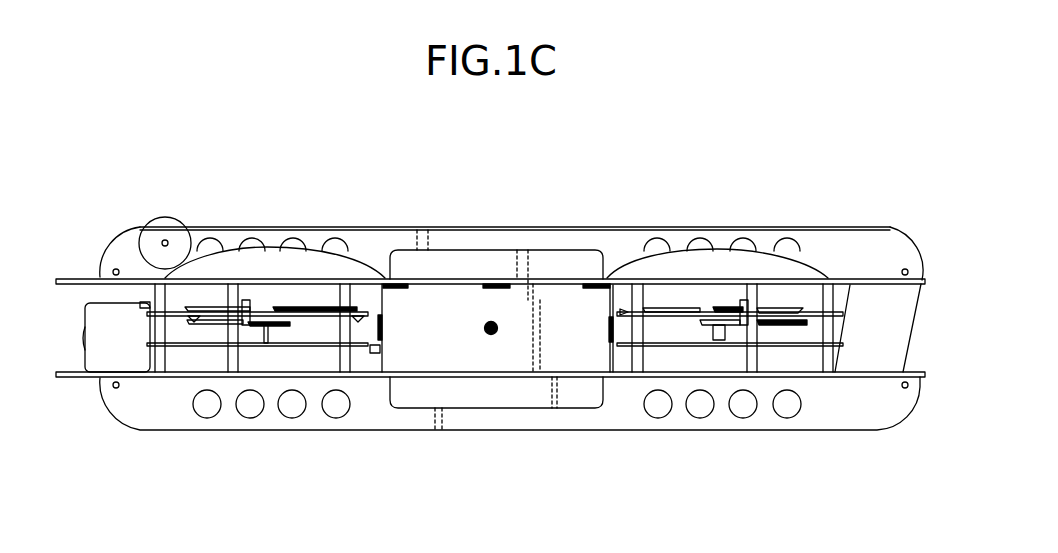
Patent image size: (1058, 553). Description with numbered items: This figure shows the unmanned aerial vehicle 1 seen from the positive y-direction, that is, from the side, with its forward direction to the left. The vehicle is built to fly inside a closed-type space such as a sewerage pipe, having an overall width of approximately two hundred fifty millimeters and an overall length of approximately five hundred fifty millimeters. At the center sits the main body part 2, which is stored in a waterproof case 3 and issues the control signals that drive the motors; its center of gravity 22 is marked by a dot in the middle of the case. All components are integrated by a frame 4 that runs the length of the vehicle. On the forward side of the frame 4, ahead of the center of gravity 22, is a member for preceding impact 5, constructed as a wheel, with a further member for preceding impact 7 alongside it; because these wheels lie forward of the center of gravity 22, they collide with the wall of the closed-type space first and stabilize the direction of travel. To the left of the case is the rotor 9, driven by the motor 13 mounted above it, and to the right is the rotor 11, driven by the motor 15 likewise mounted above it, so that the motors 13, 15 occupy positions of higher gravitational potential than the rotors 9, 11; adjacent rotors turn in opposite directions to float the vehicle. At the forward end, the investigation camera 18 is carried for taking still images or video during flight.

The unmanned aerial vehicle 1 is at (755, 170).
The main body part 2 is at (495, 332).
The waterproof case 3 is at (502, 397).
The frame 4 is at (853, 418).
The member for preceding impact 5 is at (163, 226).
The member for preceding impact 7 is at (225, 280).
The rotor 9 is at (197, 323).
The rotor 11 is at (777, 318).
The motor 13 is at (272, 295).
The motor 15 is at (707, 297).
The investigation camera 18 is at (83, 352).
The center of gravity 22 is at (491, 322).